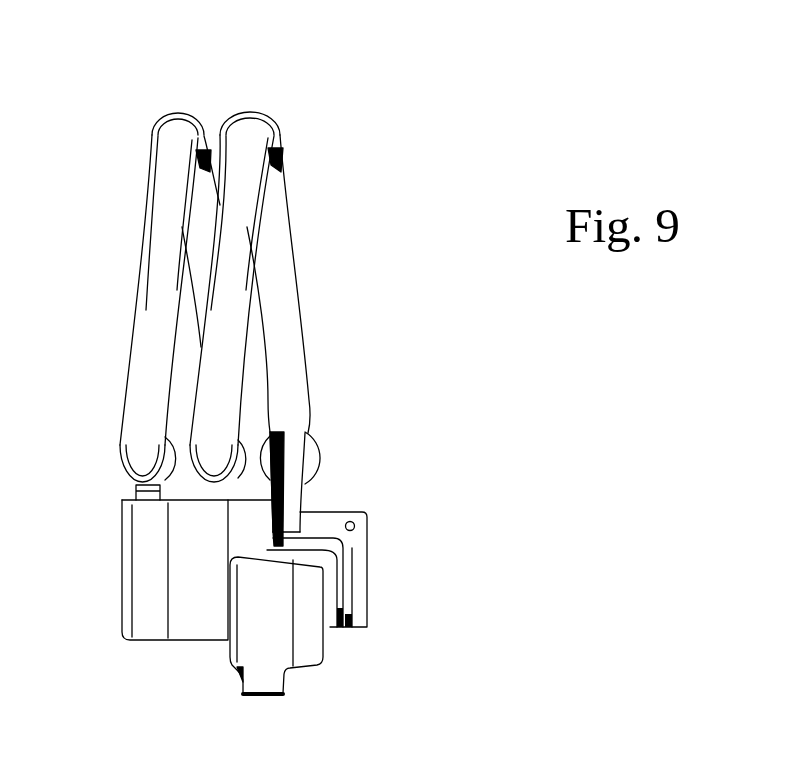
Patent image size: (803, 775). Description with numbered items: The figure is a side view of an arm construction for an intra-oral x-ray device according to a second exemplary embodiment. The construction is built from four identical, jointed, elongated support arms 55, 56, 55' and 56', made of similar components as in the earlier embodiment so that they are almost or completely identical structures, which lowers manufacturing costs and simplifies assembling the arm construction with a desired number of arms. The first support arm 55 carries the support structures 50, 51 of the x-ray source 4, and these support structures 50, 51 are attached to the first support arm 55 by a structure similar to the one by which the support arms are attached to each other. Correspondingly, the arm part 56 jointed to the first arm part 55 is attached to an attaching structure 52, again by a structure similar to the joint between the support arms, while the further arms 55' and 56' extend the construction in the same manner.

The x-ray source 4 is at (310, 660).
The support structure 50 is at (282, 457).
The support structure 51 is at (288, 500).
The attaching structure 52 is at (137, 480).
The first support arm 55 is at (310, 340).
The support arm 55' is at (225, 206).
The second support arm 56 is at (297, 297).
The support arm 56' is at (121, 297).